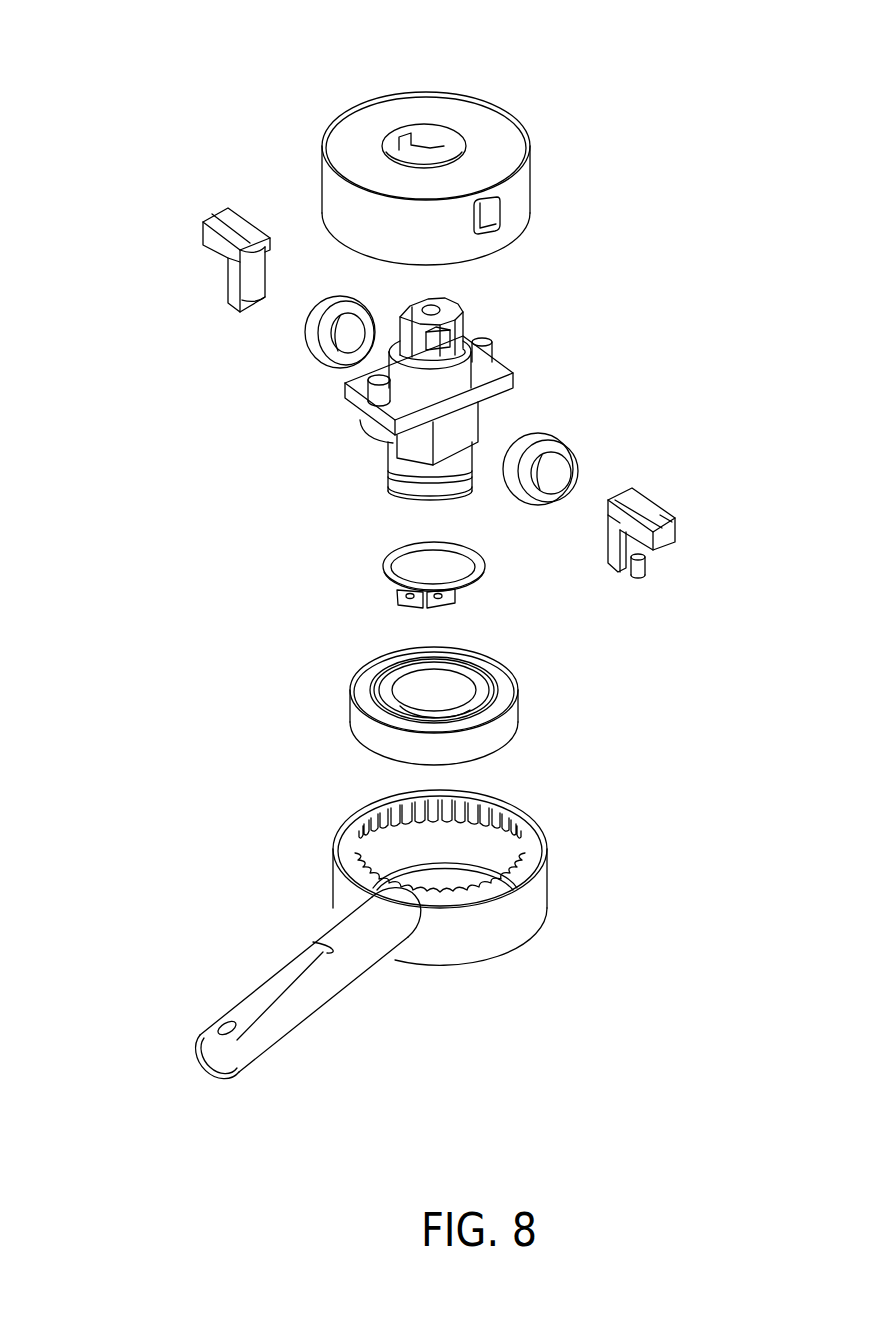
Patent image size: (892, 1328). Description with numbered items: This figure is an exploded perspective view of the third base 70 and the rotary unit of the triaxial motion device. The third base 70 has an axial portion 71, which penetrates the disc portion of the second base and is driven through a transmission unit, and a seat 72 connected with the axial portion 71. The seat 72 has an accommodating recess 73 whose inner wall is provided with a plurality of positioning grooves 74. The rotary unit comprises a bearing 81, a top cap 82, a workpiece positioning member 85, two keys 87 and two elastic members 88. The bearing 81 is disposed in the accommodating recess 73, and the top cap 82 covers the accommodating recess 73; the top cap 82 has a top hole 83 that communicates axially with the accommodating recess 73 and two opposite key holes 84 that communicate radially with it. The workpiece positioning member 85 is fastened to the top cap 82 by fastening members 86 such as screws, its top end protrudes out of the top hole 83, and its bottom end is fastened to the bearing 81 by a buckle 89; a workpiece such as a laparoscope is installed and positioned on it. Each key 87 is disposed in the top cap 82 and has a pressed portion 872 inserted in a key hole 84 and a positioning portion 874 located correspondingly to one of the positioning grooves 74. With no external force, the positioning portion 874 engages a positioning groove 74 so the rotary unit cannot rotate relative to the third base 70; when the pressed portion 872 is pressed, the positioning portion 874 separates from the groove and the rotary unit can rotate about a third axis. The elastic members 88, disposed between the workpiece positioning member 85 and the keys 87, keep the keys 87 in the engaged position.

The third base 70 is at (385, 941).
The axial portion 71 is at (308, 983).
The seat 72 is at (435, 914).
The accommodating recess 73 is at (448, 878).
The positioning grooves 74 is at (388, 812).
The bearing 81 is at (505, 722).
The top cap 82 is at (457, 133).
The top hole 83 is at (462, 134).
The key holes 84 is at (398, 148).
The workpiece positioning member 85 is at (480, 304).
The fastening members 86 is at (493, 347).
The keys 87 is at (435, 424).
The pressed portion 872 is at (665, 532).
The positioning portion 874 is at (640, 578).
The elastic members 88 is at (308, 337).
The buckle 89 is at (388, 562).